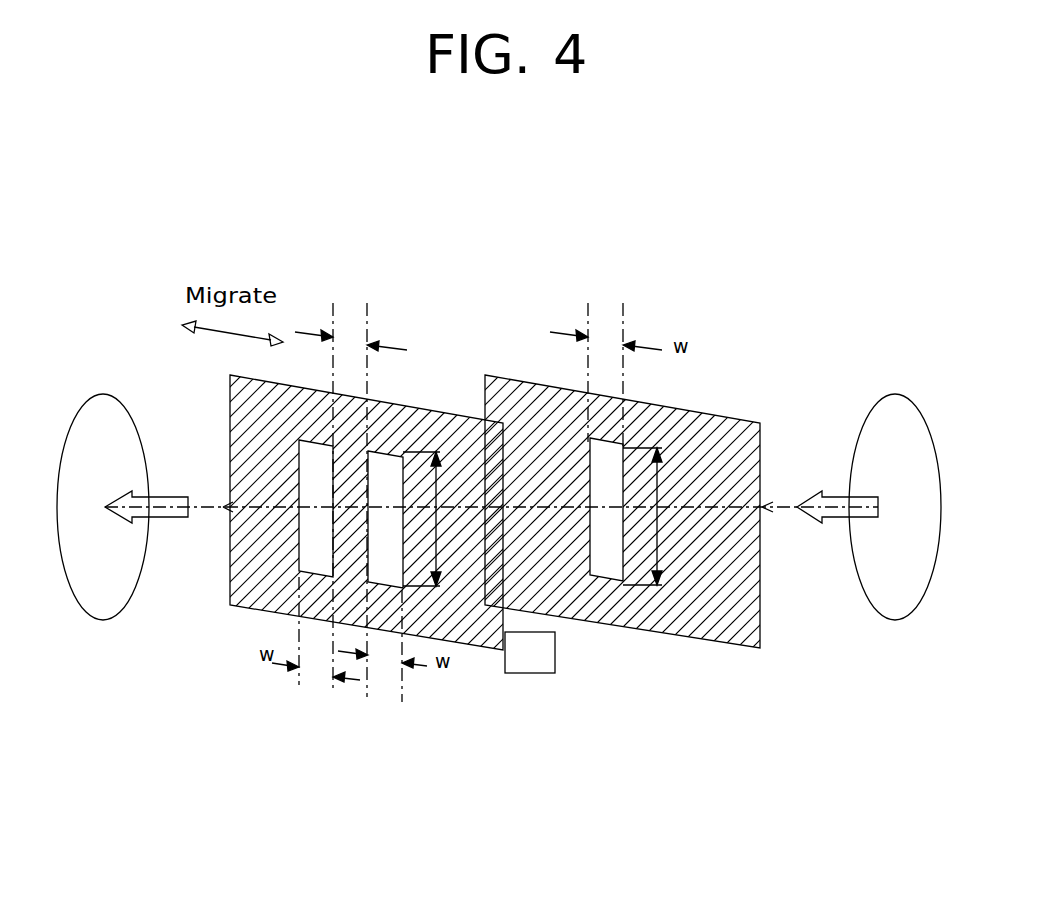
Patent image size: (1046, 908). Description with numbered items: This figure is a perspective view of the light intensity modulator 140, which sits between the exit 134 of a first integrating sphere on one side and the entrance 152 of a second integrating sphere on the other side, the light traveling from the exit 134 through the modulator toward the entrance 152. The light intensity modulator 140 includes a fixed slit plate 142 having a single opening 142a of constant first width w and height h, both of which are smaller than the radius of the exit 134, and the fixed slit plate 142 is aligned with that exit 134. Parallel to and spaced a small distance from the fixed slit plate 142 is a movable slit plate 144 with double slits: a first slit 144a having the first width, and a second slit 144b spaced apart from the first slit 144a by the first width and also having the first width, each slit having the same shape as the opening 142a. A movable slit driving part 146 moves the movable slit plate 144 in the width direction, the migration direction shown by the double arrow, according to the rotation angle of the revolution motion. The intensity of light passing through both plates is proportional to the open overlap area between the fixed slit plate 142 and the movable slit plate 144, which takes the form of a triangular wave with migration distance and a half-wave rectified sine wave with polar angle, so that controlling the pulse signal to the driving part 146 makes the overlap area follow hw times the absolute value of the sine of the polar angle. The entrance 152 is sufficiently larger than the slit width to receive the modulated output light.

The exit 134 is at (890, 616).
The light intensity modulator 140 is at (463, 364).
The fixed slit plate 142 is at (738, 650).
The opening 142a is at (617, 445).
The movable slit plate 144 is at (475, 647).
The first slit 144a is at (372, 469).
The second slit 144b is at (299, 443).
The movable slit driving part 146 is at (528, 673).
The entrance 152 is at (100, 616).